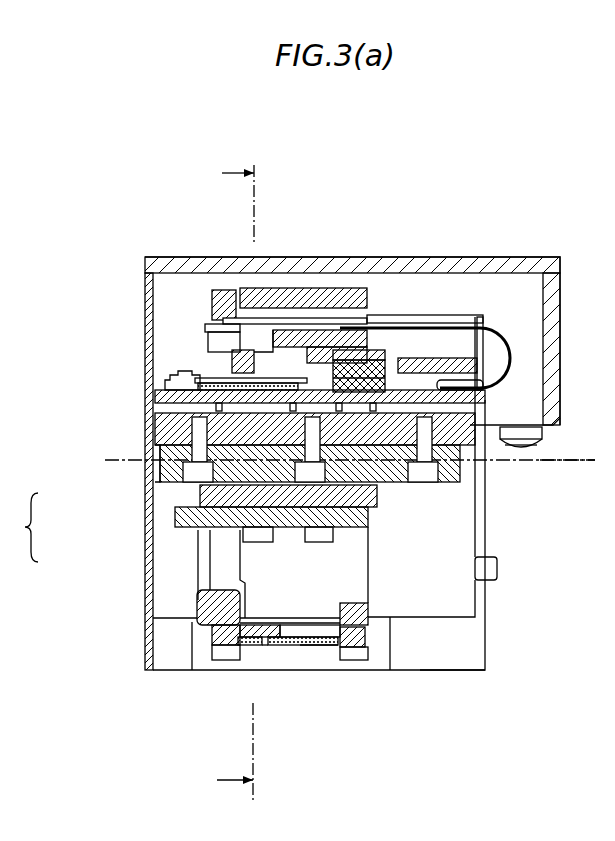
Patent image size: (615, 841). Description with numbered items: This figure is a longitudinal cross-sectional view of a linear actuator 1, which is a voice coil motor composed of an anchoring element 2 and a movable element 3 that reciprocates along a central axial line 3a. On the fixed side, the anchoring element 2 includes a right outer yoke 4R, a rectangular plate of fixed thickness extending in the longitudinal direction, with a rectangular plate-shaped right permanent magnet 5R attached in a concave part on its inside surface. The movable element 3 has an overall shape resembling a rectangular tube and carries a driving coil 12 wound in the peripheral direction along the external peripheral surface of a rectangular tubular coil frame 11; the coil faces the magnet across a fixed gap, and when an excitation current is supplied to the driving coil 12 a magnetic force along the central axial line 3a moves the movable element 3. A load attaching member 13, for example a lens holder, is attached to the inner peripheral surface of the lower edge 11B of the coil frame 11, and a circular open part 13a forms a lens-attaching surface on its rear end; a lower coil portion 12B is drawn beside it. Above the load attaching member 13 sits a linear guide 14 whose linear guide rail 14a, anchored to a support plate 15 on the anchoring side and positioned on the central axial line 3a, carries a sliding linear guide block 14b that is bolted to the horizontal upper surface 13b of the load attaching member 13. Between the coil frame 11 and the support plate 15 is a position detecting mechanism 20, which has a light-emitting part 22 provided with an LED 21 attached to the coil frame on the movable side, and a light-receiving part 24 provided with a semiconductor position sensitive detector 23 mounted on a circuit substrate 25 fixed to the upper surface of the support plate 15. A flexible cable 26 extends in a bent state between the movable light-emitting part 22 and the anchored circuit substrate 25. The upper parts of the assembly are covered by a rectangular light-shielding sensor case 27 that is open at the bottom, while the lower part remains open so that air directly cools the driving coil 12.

The linear actuator 1 is at (466, 222).
The anchoring element 2 is at (495, 642).
The movable element 3 is at (287, 660).
The central axial line 3a is at (546, 462).
The right outer yoke 4R is at (437, 673).
The right permanent magnet 5R is at (415, 610).
The coil frame 11 is at (205, 637).
The lower edge of the coil frame 11B is at (265, 630).
The driving coil 12 is at (320, 660).
The magnet 12B is at (250, 643).
The load attaching member 13 is at (185, 592).
The circular open part 13a is at (203, 547).
The horizontal upper surface 13b is at (372, 499).
The linear guide 14 is at (21, 527).
The linear guide rail 14a is at (160, 478).
The linear guide block 14b is at (208, 497).
The support plate 15 is at (450, 437).
The position detecting mechanism 20 is at (196, 348).
The LED 21 is at (240, 300).
The light-emitting part 22 is at (196, 328).
The semiconductor position sensitive detector 23 is at (235, 386).
The light-receiving part 24 is at (190, 394).
The circuit substrate 25 is at (385, 393).
The flexible cable 26 is at (456, 320).
The light-shielding sensor case 27 is at (318, 265).